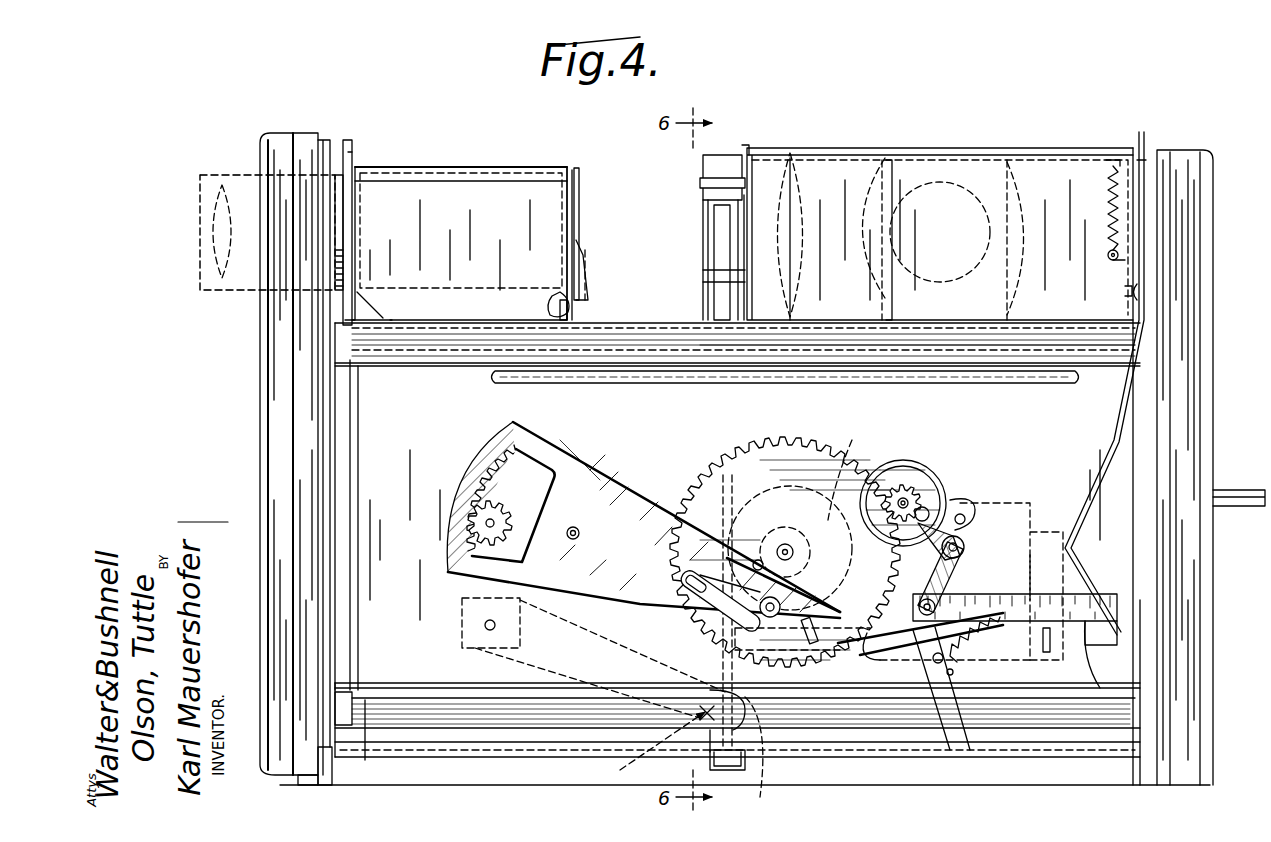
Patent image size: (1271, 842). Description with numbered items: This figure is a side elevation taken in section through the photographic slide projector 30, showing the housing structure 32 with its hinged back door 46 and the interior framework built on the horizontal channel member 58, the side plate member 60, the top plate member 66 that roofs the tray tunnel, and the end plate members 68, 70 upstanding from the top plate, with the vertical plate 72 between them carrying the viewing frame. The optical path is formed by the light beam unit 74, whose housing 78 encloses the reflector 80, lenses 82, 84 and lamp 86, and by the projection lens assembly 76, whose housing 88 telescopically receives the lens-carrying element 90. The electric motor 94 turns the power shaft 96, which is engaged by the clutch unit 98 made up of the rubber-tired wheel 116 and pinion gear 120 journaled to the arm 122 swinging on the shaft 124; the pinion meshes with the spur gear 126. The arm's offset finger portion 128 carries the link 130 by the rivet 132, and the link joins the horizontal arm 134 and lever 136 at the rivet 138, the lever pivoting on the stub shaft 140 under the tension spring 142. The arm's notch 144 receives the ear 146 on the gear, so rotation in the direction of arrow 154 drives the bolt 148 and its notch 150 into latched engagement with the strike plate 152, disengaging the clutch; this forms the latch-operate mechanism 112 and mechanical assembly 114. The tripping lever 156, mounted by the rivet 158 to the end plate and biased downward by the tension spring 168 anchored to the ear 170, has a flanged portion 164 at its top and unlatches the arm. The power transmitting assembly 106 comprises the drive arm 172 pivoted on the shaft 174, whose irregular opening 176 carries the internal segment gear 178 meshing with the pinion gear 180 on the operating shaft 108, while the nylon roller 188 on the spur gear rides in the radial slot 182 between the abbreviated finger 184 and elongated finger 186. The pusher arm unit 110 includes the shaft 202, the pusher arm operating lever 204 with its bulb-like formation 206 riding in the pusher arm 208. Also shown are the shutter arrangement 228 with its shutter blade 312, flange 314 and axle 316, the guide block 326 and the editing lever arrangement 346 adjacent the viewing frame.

The photographic slide projector 30 is at (193, 170).
The housing structure 32 is at (255, 365).
The hinged back door 46 is at (1250, 510).
The horizontal channel member 58 is at (342, 770).
The side plate member 60 is at (410, 418).
The top plate member 66 is at (445, 330).
The end plate member 68 is at (355, 150).
The end plate member 70 is at (1105, 322).
The vertical plate 72 is at (752, 148).
The light beam unit 74 is at (882, 148).
The projection lens assembly 76 is at (458, 168).
The housing 78 is at (942, 148).
The reflector 80 is at (1030, 228).
The lens 82 is at (800, 280).
The lens 84 is at (868, 205).
The lamp 86 is at (942, 282).
The housing 88 is at (520, 170).
The lens-carrying element 90 is at (232, 172).
The electric motor 94 is at (1025, 500).
The power shaft 96 is at (1025, 530).
The clutch unit 98 is at (908, 460).
The power transmitting assembly 106 is at (665, 490).
The operating shaft 108 is at (482, 523).
The pusher arm unit 110 is at (618, 783).
The latch-operate mechanism 112 is at (900, 670).
The mechanical assembly 114 is at (985, 550).
The rubber-tired wheel 116 is at (918, 485).
The pinion gear 120 is at (930, 505).
The arm 122 is at (850, 438).
The shaft 124 is at (792, 508).
The spur gear 126 is at (768, 442).
The offset finger portion 128 is at (966, 554).
The link 130 is at (955, 578).
The rivet 132 is at (1010, 500).
The horizontal arm 134 is at (840, 640).
The lever 136 is at (925, 650).
The rivet 138 is at (936, 607).
The stub shaft 140 is at (940, 700).
The tension spring 142 is at (975, 668).
The notch 144 is at (800, 675).
The ear 146 is at (722, 652).
The bolt 148 is at (1112, 590).
The notch 150 is at (1047, 656).
The strike plate 152 is at (1098, 680).
The arrow 154 is at (690, 455).
The tripping lever 156 is at (1105, 540).
The rivet 158 is at (1147, 292).
The flanged portion 164 is at (1142, 158).
The tension spring 168 is at (1108, 185).
The ear 170 is at (1110, 258).
The drive arm 172 is at (582, 470).
The shaft 174 is at (578, 530).
The irregular opening 176 is at (538, 462).
The internal segment gear 178 is at (468, 470).
The pinion gear 180 is at (492, 458).
The radial slot 182 is at (690, 586).
The abbreviated finger 184 is at (620, 630).
The elongated finger 186 is at (790, 544).
The nylon roller 188 is at (752, 566).
The shaft 202 is at (482, 622).
The pusher arm operating lever 204 is at (425, 672).
The bulb-like formation 206 is at (706, 760).
The pusher arm 208 is at (762, 790).
The shutter arrangement 228 is at (592, 252).
The shutter blade 312 is at (580, 185).
The flange 314 is at (562, 290).
The axle 316 is at (552, 300).
The guide block 326 is at (700, 178).
The editing lever arrangement 346 is at (700, 262).